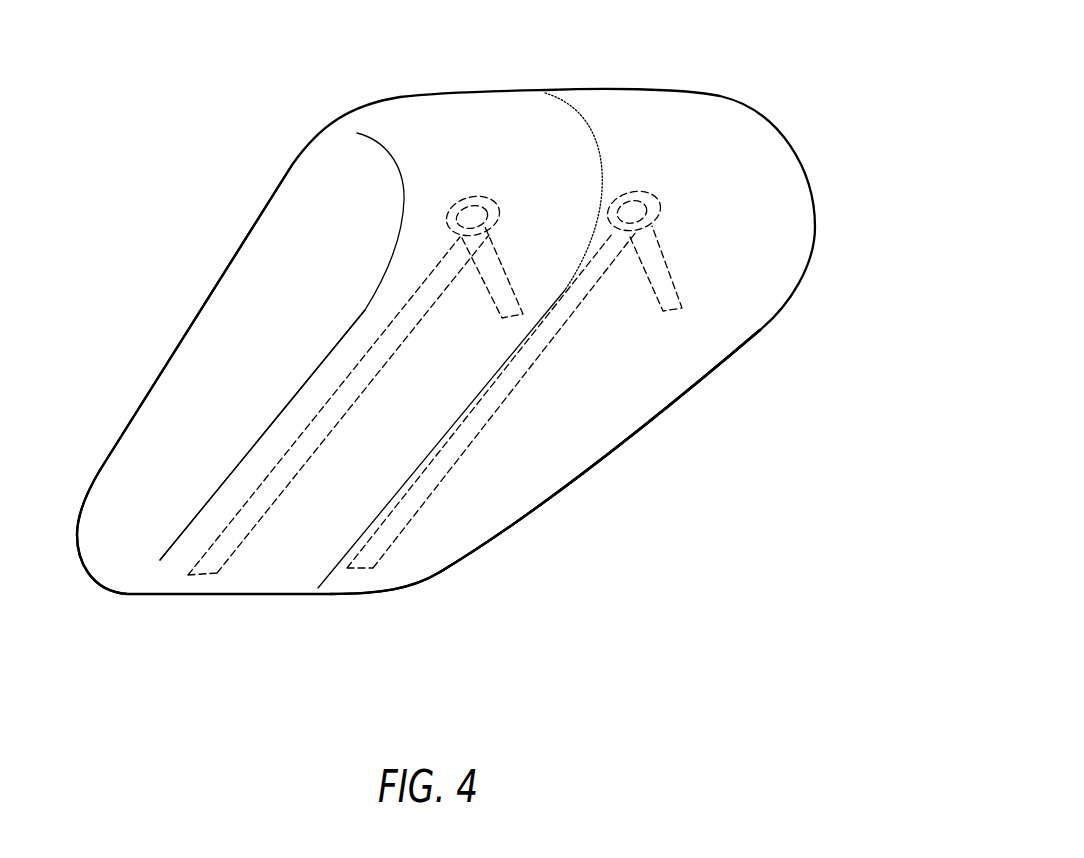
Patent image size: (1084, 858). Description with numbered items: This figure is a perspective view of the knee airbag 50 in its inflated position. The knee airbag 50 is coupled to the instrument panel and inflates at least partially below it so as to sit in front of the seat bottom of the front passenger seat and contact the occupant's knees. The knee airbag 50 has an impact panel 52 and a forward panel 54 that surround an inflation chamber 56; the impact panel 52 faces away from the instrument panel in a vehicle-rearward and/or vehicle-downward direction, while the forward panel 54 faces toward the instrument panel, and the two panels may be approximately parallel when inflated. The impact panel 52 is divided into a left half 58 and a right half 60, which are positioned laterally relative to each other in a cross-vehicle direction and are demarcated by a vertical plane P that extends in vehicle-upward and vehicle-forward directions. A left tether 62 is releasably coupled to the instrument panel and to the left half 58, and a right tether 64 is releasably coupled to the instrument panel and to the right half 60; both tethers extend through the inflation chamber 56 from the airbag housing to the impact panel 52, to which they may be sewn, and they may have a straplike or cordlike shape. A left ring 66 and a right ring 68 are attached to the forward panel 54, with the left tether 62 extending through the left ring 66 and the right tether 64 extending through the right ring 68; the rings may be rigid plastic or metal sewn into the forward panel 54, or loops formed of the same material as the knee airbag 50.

The knee airbag 50 is at (140, 136).
The impact panel 52 is at (617, 448).
The forward panel 54 is at (198, 303).
The inflation chamber 56 is at (140, 507).
The left half 58 is at (270, 557).
The right half 60 is at (462, 518).
The left tether 62 is at (362, 355).
The right tether 64 is at (542, 355).
The left ring 66 is at (476, 196).
The right ring 68 is at (638, 193).
The vertical plane P is at (593, 131).